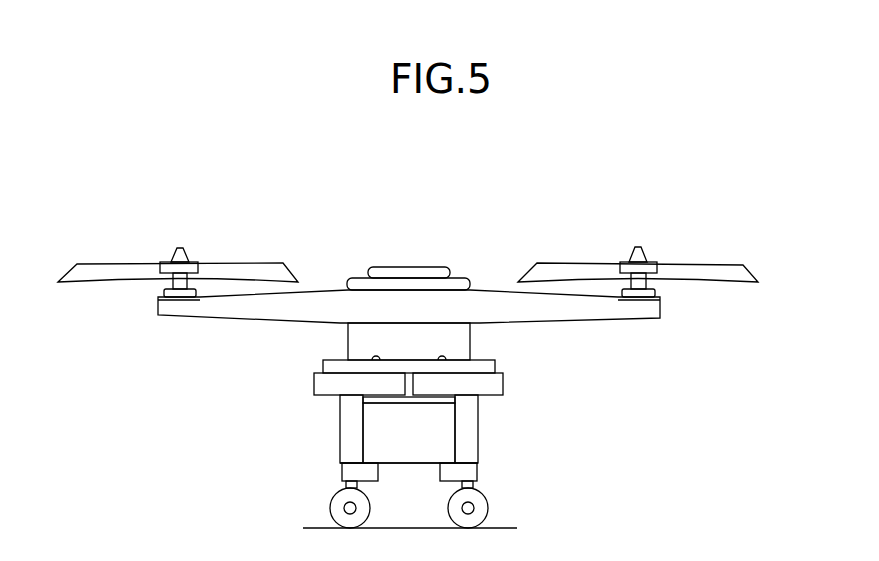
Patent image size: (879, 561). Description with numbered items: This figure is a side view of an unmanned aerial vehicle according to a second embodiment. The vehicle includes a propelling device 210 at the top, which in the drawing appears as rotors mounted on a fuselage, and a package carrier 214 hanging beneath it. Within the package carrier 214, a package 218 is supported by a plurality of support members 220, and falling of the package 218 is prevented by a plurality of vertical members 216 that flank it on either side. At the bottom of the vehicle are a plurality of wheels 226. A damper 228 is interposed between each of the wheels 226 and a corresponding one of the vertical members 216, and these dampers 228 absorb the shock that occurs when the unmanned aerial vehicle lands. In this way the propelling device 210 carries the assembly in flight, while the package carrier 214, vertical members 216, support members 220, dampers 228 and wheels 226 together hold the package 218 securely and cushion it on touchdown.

The propelling device 210 is at (694, 304).
The package carrier 214 is at (694, 474).
The vertical members 216 is at (352, 410).
The package 218 is at (443, 433).
The support members 220 is at (348, 473).
The damper 228 is at (348, 483).
The wheels 226 is at (334, 511).